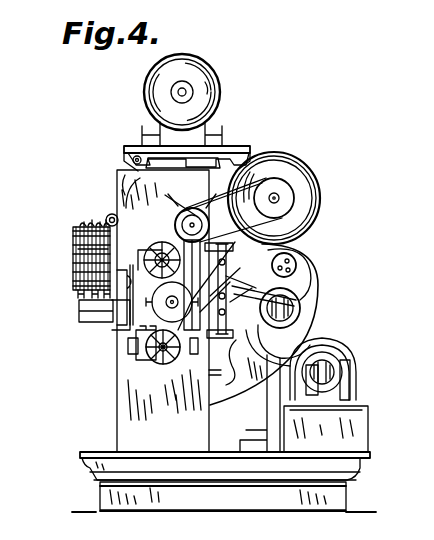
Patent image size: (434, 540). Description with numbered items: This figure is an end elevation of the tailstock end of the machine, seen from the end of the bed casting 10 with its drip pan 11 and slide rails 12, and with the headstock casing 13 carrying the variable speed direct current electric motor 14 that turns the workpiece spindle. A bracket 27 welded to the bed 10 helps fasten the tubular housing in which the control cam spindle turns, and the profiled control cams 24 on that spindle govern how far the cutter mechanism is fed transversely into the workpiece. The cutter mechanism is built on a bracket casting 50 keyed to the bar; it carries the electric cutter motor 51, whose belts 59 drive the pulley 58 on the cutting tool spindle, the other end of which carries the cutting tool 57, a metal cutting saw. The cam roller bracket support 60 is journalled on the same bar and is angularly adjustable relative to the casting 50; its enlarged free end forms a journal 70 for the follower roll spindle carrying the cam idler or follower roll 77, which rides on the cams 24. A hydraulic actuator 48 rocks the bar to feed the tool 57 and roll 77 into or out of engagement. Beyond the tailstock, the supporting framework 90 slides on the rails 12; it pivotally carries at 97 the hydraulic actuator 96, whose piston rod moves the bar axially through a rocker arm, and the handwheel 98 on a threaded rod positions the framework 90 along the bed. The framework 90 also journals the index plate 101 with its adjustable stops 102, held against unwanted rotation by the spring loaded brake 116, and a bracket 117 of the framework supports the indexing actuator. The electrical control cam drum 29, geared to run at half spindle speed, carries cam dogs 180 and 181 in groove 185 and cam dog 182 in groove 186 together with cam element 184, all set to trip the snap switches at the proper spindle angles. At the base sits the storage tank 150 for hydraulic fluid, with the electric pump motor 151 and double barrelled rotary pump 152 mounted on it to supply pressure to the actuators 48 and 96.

The bed casting 10 is at (140, 414).
The drip pan 11 is at (100, 488).
The slide rails 12 is at (124, 340).
The headstock casing 13 is at (108, 216).
The variable speed direct current electric motor 14 is at (221, 89).
The profiled control cams 24 is at (312, 264).
The bracket 27 is at (299, 338).
The electrical control cam drum 29 is at (77, 270).
The hydraulic actuator 48 is at (278, 450).
The bracket casting 50 is at (302, 289).
The electric cutter motor 51 is at (300, 203).
The cutting tool 57 is at (172, 212).
The pulley 58 is at (140, 178).
The belts 59 is at (224, 236).
The cam roller bracket support 60 is at (300, 308).
The journal 70 is at (304, 325).
The cam idler or follower roll 77 is at (312, 310).
The supporting framework 90 is at (118, 331).
The hydraulic actuator 96 is at (206, 370).
The pivot 97 is at (232, 385).
The handwheel 98 is at (206, 360).
The index plate 101 is at (296, 258).
The adjustable stops 102 is at (288, 180).
The spring loaded brake 116 is at (73, 259).
The bracket 117 is at (79, 314).
The storage tank 150 is at (326, 438).
The electric pump motor 151 is at (328, 358).
The double barrelled rotary pump 152 is at (338, 374).
The cam dog 180 is at (76, 286).
The cam dog 181 is at (82, 228).
The cam dog 182 is at (92, 227).
The cam element 184 is at (104, 224).
The groove 185 is at (73, 236).
The groove 186 is at (92, 249).